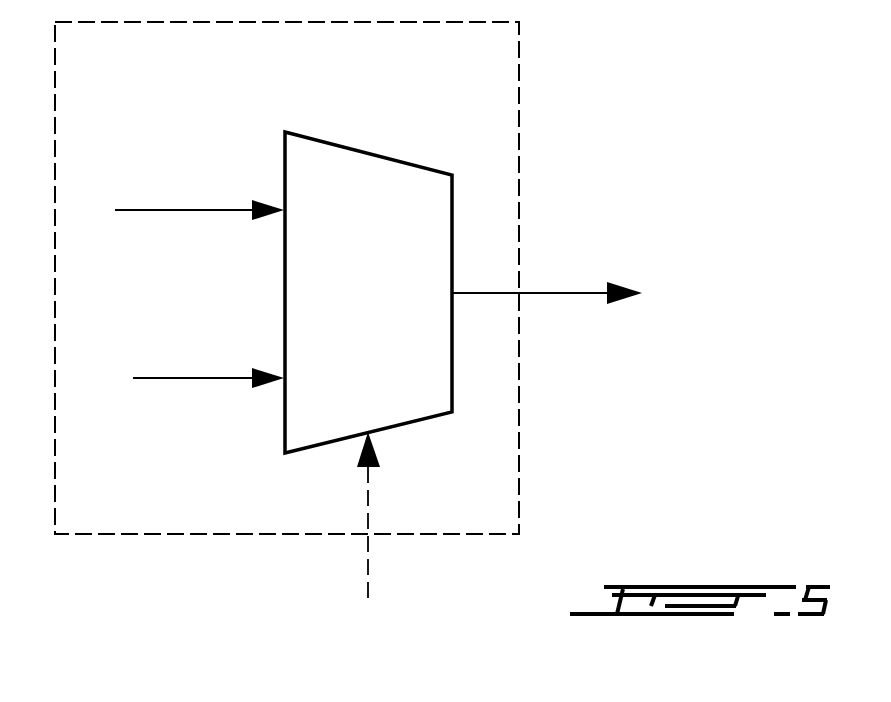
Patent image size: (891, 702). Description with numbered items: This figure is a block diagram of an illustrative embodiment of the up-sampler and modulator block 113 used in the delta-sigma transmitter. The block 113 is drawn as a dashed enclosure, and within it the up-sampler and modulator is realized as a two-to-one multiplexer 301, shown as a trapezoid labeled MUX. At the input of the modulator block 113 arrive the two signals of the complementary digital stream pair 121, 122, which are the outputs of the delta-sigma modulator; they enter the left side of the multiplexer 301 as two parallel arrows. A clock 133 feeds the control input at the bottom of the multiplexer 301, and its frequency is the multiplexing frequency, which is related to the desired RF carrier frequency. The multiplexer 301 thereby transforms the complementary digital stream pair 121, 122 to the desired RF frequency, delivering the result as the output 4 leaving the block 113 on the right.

The up-sampler and modulator block 113 is at (519, 85).
The 2:1 multiplexer 301 is at (372, 152).
The complementary digital stream 121 is at (212, 210).
The complementary digital stream 122 is at (207, 378).
The clock 133 is at (370, 562).
The output signal 4 is at (558, 293).